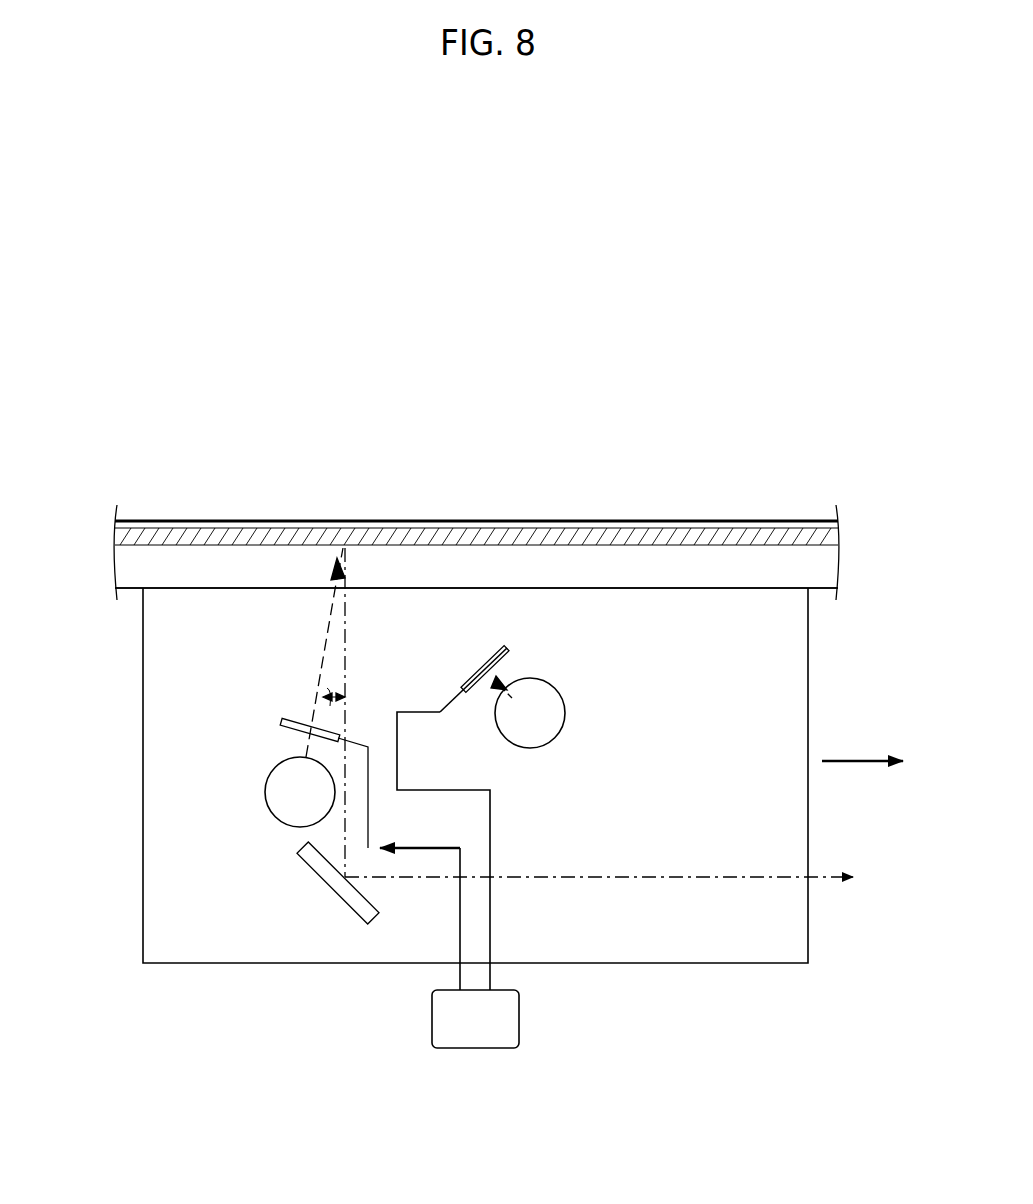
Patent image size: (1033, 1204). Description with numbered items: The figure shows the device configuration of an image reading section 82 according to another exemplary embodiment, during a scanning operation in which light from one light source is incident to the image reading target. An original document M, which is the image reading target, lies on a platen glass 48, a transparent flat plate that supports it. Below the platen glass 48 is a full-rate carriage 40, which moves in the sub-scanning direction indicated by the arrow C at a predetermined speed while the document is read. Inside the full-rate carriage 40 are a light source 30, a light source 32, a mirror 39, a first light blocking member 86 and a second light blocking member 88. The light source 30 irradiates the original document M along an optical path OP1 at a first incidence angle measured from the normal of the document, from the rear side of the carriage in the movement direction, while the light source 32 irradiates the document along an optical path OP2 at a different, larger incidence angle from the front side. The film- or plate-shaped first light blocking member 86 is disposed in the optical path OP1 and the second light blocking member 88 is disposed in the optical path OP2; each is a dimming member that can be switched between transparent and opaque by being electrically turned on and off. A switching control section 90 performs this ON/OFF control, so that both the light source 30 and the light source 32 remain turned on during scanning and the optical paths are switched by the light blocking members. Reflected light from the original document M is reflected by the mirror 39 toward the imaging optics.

The image reading section 82 is at (200, 486).
The original document M is at (548, 520).
The platen glass 48 is at (740, 546).
The full-rate carriage 40 is at (143, 808).
The optical path OP1 is at (325, 616).
The optical path OP2 is at (500, 692).
The first light blocking member 86 is at (282, 724).
The second light blocking member 88 is at (507, 648).
The switching control section 90 is at (519, 1018).
The light source 30 is at (268, 800).
The light source 32 is at (548, 682).
The mirror 39 is at (320, 878).
The sub-scanning direction C is at (850, 758).